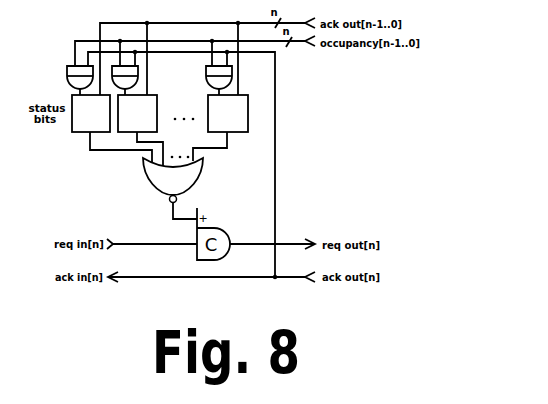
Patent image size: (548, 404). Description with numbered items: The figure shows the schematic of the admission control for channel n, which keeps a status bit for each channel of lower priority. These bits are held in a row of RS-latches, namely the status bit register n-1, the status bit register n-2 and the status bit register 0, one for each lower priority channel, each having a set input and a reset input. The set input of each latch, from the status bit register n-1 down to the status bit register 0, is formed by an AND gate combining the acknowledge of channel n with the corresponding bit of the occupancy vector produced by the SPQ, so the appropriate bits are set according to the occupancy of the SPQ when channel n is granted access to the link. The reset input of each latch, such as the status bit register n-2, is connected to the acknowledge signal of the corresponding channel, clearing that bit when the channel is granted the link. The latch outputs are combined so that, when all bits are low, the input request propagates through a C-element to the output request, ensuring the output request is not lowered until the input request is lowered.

The status bit register n-1 is at (88, 99).
The status bit register n-2 is at (134, 99).
The status bit register 0 is at (227, 99).